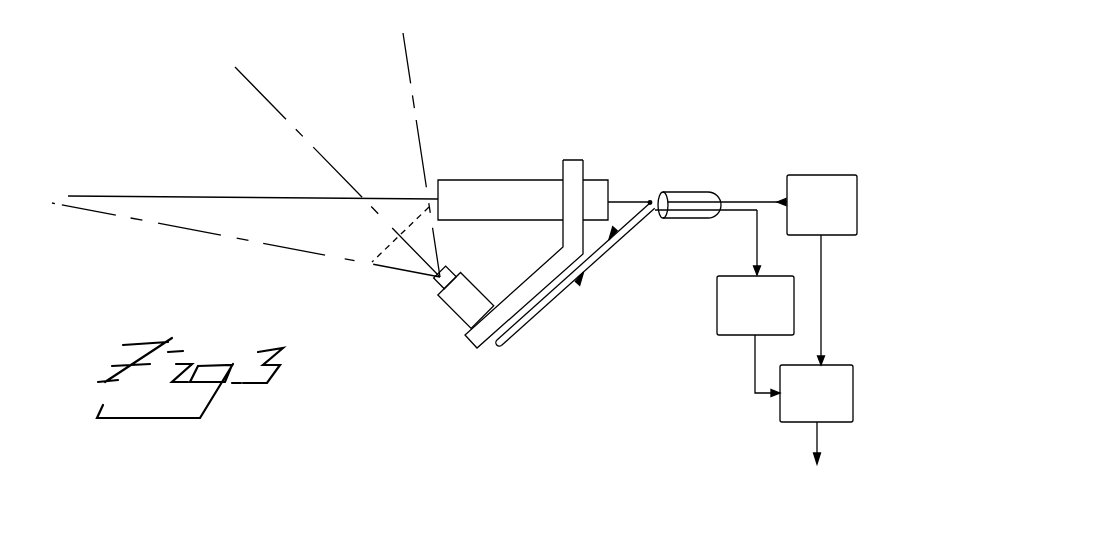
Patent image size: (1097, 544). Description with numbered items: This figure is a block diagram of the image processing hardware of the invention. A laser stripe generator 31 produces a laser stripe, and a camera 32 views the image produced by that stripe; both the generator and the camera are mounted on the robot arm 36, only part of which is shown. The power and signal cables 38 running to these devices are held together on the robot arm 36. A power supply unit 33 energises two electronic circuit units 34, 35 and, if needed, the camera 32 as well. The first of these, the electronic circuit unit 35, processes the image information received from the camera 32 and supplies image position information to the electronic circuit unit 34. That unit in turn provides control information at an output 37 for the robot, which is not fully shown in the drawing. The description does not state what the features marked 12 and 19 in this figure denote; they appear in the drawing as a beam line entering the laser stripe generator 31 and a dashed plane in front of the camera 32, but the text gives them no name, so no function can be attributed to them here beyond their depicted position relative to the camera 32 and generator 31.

The incident light beam 12 is at (110, 196).
The focal plane 19 is at (380, 252).
The laser stripe generator 31 is at (595, 182).
The camera 32 is at (460, 307).
The power supply unit 33 is at (821, 175).
The electronic circuit unit 34 is at (816, 393).
The electronic circuit unit 35 is at (717, 310).
The robot arm 36 is at (537, 273).
The output 37 is at (817, 432).
The power and signal cables 38 is at (686, 192).